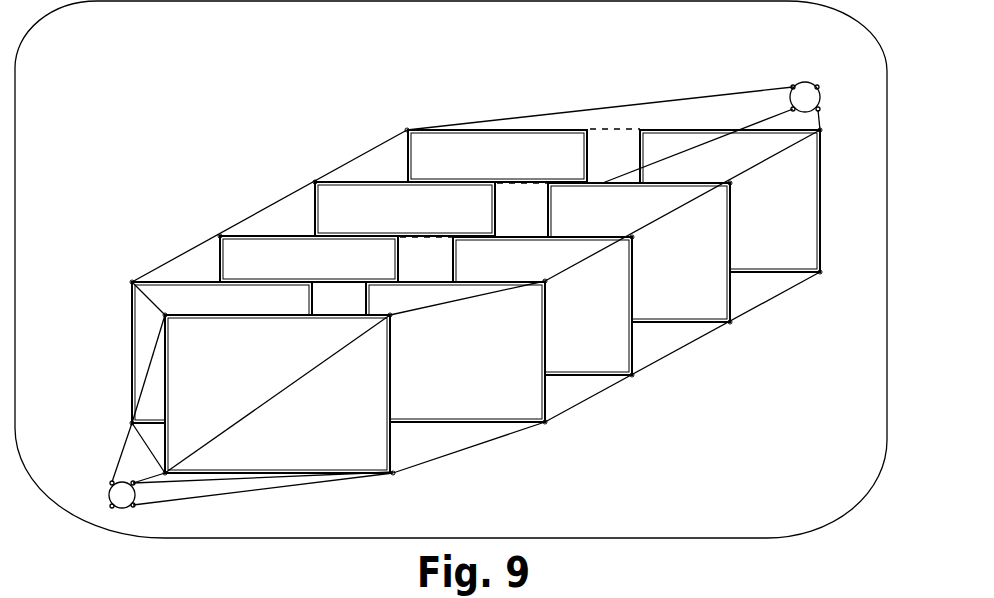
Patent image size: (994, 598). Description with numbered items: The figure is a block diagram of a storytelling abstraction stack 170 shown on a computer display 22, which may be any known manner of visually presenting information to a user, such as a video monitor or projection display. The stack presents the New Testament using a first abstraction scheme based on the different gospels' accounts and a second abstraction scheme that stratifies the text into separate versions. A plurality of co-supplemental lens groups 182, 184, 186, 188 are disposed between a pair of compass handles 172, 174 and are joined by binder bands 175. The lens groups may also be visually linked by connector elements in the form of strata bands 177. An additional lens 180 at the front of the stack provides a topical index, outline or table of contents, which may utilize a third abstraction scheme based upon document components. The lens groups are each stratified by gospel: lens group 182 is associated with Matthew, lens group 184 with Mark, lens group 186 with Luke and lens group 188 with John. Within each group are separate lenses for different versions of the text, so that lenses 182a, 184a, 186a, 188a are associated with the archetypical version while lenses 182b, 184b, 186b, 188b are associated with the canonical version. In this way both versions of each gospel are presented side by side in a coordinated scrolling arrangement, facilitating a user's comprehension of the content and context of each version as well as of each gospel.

The computer display 22 is at (823, 528).
The abstraction stack 170 is at (117, 150).
The compass handle 172 is at (793, 83).
The compass handle 174 is at (136, 500).
The binder band 175 is at (675, 98).
The strata band 177 is at (603, 127).
The additional lens 180 is at (357, 443).
The lens group 182 is at (362, 377).
The lens 182a is at (492, 368).
The lens 182b is at (287, 311).
The lens group 184 is at (461, 322).
The lens 184a is at (617, 320).
The lens 184b is at (362, 272).
The lens group 186 is at (556, 268).
The lens 186a is at (622, 220).
The lens 186b is at (468, 220).
The lens group 188 is at (635, 222).
The lens 188a is at (712, 166).
The lens 188b is at (565, 168).